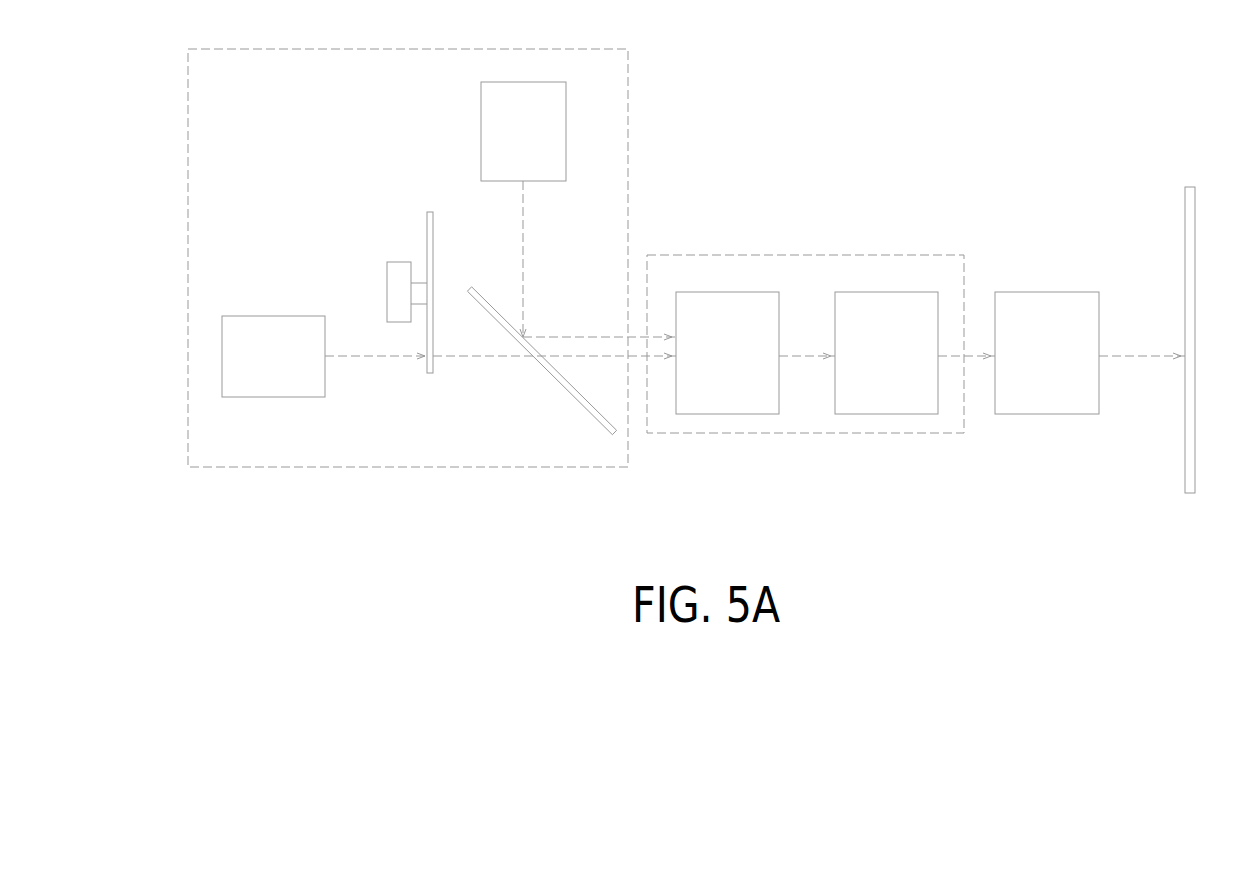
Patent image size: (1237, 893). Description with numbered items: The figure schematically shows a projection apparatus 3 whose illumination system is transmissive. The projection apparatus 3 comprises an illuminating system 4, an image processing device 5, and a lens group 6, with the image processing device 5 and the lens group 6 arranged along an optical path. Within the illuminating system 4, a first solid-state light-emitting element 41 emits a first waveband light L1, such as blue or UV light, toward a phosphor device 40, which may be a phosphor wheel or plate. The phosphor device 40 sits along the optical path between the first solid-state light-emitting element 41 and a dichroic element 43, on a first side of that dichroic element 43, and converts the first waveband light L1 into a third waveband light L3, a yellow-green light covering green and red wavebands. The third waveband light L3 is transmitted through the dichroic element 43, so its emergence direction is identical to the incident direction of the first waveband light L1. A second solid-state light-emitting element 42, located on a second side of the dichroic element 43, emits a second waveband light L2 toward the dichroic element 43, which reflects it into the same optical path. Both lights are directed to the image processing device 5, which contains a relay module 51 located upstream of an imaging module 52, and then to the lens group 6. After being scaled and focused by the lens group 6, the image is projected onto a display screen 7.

The projection apparatus 3 is at (926, 119).
The illuminating system 4 is at (255, 48).
The phosphor device 40 is at (429, 211).
The first solid-state light-emitting element 41 is at (275, 316).
The second solid-state light-emitting element 42 is at (566, 119).
The dichroic element 43 is at (548, 373).
The image processing device 5 is at (805, 255).
The relay module 51 is at (727, 414).
The imaging module 52 is at (886, 414).
The lens group 6 is at (1048, 414).
The display screen 7 is at (1189, 190).
The first waveband light L1 is at (367, 357).
The second waveband light L2 is at (599, 337).
The third waveband light L3 is at (458, 357).